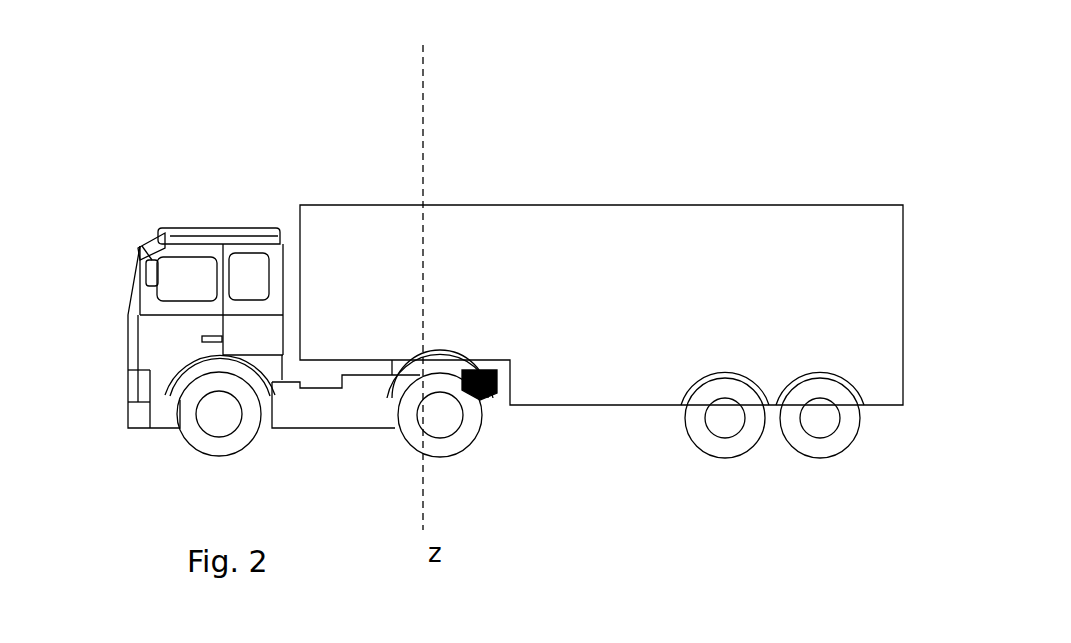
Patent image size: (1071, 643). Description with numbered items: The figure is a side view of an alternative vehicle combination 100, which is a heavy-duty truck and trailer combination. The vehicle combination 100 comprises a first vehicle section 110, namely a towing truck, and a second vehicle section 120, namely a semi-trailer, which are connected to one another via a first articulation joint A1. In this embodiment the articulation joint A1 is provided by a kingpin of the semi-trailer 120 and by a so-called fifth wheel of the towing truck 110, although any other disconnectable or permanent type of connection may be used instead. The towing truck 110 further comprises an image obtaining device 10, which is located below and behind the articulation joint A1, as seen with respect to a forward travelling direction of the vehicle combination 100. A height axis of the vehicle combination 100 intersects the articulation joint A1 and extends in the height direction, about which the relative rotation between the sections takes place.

The vehicle combination 100 is at (360, 152).
The first vehicle section 110 is at (188, 222).
The second vehicle section 120 is at (562, 205).
The first articulation joint A1 is at (438, 345).
The image obtaining device 10 is at (490, 395).